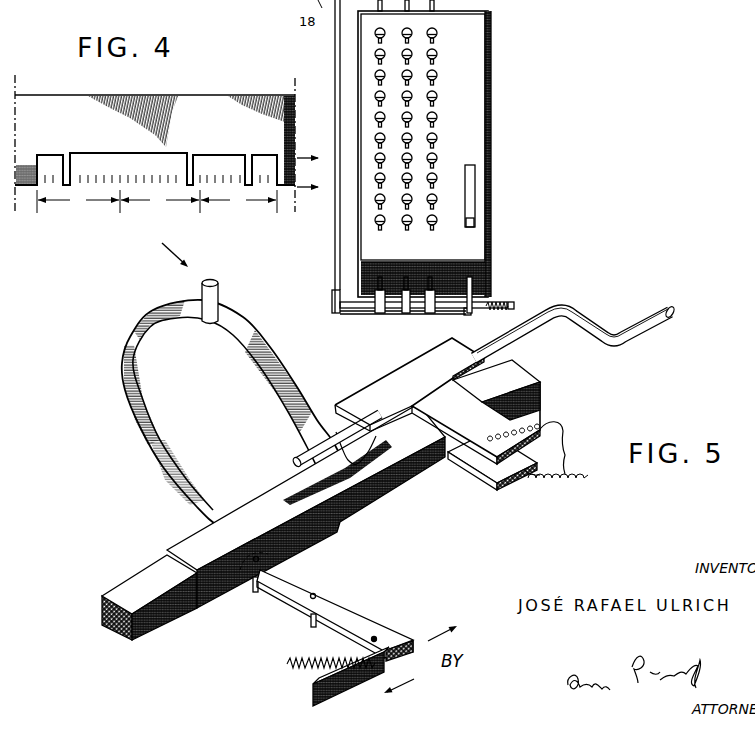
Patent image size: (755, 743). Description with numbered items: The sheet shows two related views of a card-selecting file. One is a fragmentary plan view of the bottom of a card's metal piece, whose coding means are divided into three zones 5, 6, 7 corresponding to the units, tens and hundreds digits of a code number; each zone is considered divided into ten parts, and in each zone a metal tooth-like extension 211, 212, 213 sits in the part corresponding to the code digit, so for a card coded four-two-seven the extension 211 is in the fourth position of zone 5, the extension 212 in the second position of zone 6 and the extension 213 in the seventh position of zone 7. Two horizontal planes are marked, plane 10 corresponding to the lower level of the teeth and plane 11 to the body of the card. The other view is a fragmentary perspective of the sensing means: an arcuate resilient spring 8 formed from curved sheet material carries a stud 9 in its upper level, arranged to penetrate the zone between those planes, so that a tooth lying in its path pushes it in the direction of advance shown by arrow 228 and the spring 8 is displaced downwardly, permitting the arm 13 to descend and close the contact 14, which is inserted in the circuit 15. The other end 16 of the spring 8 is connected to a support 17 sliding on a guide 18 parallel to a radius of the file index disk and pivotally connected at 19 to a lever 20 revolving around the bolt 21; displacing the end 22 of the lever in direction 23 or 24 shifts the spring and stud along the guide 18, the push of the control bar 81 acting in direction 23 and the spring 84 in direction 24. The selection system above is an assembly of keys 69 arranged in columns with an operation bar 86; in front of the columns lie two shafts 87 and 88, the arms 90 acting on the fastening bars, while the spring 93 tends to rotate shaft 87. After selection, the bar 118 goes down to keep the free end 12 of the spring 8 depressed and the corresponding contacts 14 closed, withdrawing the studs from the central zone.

In FIG. 4, the zone 5 is at (238, 201).
In FIG. 4, the zone 6 is at (160, 201).
In FIG. 4, the zone 7 is at (78, 201).
In FIG. 5, the spring 8 is at (283, 365).
In FIG. 5, the stud 9 is at (219, 292).
In FIG. 4, the horizontal plane 10 is at (317, 187).
In FIG. 4, the horizontal plane 11 is at (317, 158).
In FIG. 5, the free end 12 is at (455, 347).
In FIG. 5, the arm 13 is at (472, 401).
In FIG. 5, the contact 14 is at (471, 470).
In FIG. 5, the circuit 15 is at (563, 472).
In FIG. 5, the end 16 is at (232, 501).
In FIG. 5, the support 17 is at (205, 538).
In FIG. 5, the guide 18 is at (143, 573).
In FIG. 5, the pivotal connection 19 is at (262, 557).
In FIG. 5, the lever 20 is at (351, 609).
In FIG. 5, the bolt 21 is at (308, 621).
In FIG. 5, the end 22 is at (402, 652).
In FIG. 5, the direction 23 is at (442, 634).
In FIG. 5, the direction 24 is at (404, 690).
In FIG. 5, the keys 69 is at (435, 223).
In FIG. 5, the control bar 81 is at (359, 684).
In FIG. 5, the spring 84 is at (302, 666).
In FIG. 5, the operation bar 86 is at (477, 193).
In FIG. 5, the shaft 87 is at (345, 316).
In FIG. 5, the shaft 88 is at (364, 316).
In FIG. 5, the arm 90 is at (381, 315).
In FIG. 5, the spring 93 is at (497, 303).
In FIG. 5, the bar 118 is at (645, 317).
In FIG. 4, the extension 211 is at (248, 175).
In FIG. 4, the extension 212 is at (187, 168).
In FIG. 4, the extension 213 is at (68, 172).
In FIG. 5, the arrow 228 is at (176, 262).